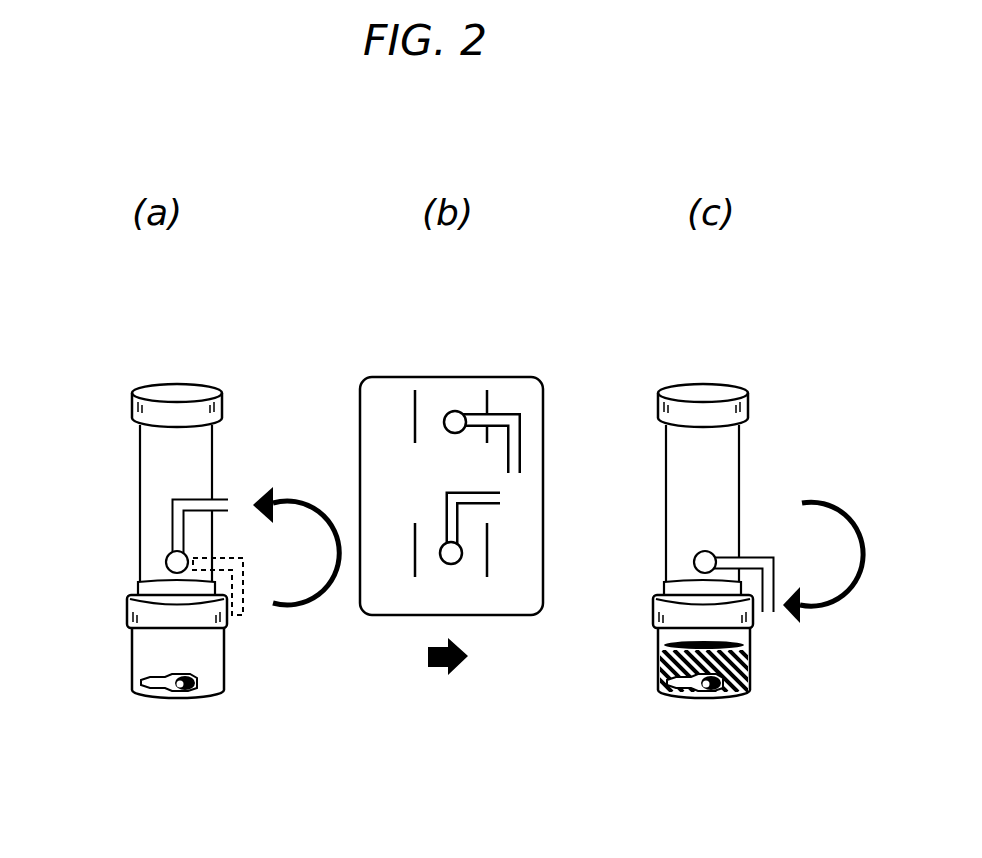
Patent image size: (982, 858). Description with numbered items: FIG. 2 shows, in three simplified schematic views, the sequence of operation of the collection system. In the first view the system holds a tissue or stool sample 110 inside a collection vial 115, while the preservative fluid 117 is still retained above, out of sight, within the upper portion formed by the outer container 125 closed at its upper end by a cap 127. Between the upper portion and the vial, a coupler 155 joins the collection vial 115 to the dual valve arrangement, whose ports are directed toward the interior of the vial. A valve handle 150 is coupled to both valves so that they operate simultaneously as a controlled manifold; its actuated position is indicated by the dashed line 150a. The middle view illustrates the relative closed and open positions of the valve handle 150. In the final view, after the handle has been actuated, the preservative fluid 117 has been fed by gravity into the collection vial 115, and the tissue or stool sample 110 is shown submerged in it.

The tissue or stool sample 110 is at (186, 688).
The collection vial 115 is at (221, 658).
The preservative fluid 117 is at (752, 673).
The outer container 125 is at (213, 460).
The cap 127 is at (217, 406).
The valve handle 150 is at (222, 498).
The dashed-line position of valve handle 150a is at (240, 580).
The coupler 155 is at (137, 614).